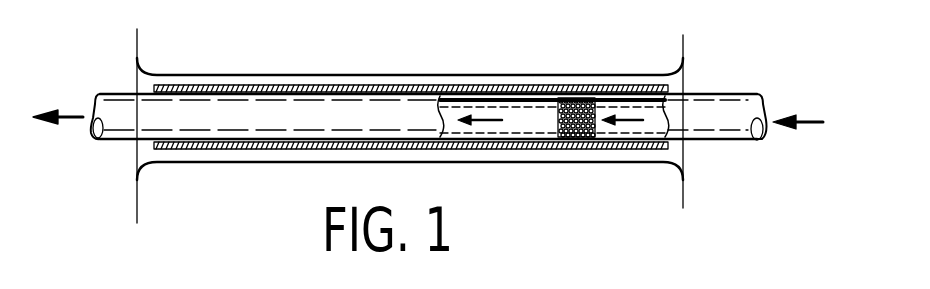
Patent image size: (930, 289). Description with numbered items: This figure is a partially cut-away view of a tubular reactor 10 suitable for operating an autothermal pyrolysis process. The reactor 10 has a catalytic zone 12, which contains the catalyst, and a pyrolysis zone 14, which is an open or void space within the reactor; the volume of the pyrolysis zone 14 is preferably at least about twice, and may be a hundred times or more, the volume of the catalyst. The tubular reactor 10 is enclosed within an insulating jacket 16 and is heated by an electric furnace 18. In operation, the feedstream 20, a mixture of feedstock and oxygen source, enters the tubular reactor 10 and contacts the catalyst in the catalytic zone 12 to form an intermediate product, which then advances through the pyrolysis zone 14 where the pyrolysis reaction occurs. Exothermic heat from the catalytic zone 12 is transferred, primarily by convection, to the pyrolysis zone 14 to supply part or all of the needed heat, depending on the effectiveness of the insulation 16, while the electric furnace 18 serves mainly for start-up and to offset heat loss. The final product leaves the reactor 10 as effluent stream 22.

The tubular reactor 10 is at (718, 93).
The catalytic zone 12 is at (567, 97).
The pyrolysis zone 14 is at (487, 93).
The insulating jacket 16 is at (299, 87).
The electric furnace 18 is at (234, 75).
The feedstream 20 is at (801, 120).
The effluent stream 22 is at (64, 113).